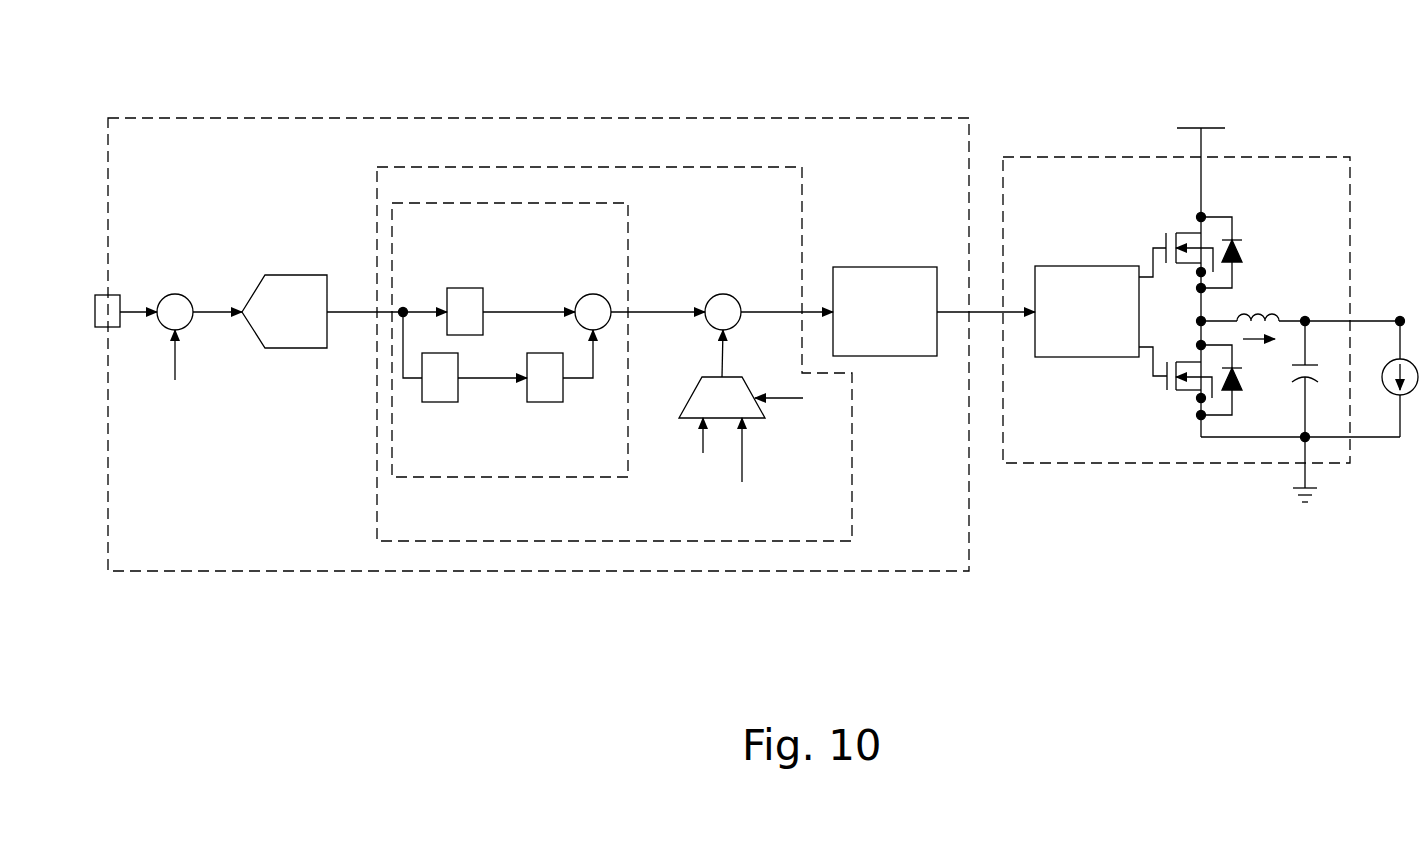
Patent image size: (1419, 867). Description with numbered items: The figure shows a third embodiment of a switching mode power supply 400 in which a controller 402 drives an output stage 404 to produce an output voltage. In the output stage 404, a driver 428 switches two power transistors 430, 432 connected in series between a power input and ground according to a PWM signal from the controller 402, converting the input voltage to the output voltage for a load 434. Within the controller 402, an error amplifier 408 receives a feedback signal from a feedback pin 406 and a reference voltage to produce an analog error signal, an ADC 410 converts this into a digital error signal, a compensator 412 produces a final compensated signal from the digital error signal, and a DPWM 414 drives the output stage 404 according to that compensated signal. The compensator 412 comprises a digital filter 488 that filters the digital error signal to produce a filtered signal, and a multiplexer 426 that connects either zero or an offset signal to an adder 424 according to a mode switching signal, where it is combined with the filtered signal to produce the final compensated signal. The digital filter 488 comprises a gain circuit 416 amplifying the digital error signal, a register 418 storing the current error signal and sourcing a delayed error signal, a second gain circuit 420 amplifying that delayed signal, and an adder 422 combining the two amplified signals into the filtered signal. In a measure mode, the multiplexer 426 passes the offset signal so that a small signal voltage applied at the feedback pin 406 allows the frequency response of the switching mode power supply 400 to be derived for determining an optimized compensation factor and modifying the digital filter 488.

The switching mode power supply 400 is at (1340, 88).
The controller 402 is at (538, 118).
The output stage 404 is at (1188, 464).
The feedback pin 406 is at (108, 295).
The error amplifier 408 is at (172, 294).
The ADC 410 is at (308, 275).
The compensator 412 is at (377, 437).
The DPWM 414 is at (888, 267).
The gain circuit 416 is at (462, 288).
The register 418 is at (432, 402).
The gain circuit 420 is at (537, 402).
The adder 422 is at (580, 294).
The adder 424 is at (723, 294).
The multiplexer 426 is at (712, 379).
The driver 428 is at (1085, 266).
The power transistor 430 is at (1178, 229).
The power transistor 432 is at (1173, 402).
The load 434 is at (1383, 393).
The digital filter 488 is at (628, 218).